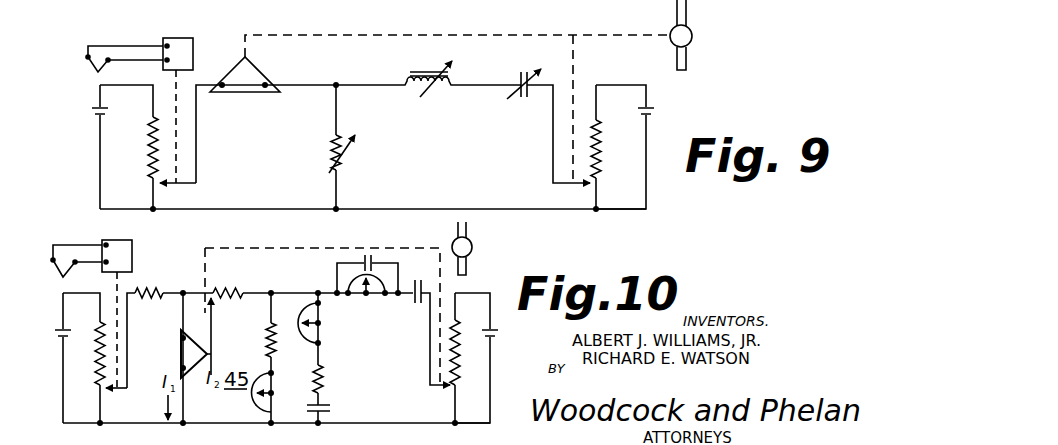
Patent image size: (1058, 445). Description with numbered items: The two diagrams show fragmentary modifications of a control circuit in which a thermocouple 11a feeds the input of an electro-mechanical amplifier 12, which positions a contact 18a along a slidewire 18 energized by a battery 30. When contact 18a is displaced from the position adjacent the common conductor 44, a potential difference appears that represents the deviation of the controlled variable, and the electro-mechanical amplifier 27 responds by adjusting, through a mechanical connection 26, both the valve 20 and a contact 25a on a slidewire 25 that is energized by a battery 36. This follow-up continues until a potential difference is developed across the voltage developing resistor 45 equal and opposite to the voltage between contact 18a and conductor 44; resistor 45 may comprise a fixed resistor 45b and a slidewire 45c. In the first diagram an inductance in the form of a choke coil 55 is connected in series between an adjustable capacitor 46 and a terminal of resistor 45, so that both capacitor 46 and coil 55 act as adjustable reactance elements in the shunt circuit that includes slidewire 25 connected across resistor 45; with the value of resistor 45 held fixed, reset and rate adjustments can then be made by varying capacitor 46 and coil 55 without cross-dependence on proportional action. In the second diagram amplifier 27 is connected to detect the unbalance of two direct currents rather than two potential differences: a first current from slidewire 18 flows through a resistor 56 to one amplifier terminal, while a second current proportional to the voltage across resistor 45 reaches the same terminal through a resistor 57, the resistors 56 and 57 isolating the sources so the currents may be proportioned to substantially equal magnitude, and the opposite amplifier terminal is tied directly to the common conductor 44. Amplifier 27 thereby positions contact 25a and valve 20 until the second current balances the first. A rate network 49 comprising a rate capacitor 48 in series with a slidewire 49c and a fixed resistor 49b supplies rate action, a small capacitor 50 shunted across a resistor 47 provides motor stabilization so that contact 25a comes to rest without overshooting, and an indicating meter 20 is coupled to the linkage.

In FIG. 9, the thermocouple 11a is at (92, 70).
In FIG. 10, the thermocouple 11a is at (60, 284).
In FIG. 9, the electro-mechanical amplifier 12 is at (193, 47).
In FIG. 10, the electro-mechanical amplifier 12 is at (133, 255).
In FIG. 9, the slidewire 18 is at (150, 140).
In FIG. 10, the slidewire 18 is at (98, 372).
In FIG. 9, the contact 18a is at (170, 187).
In FIG. 10, the contact 18a is at (111, 392).
In FIG. 9, the valve 20 is at (693, 35).
In FIG. 10, the valve 20 is at (473, 247).
In FIG. 9, the slidewire 25 is at (599, 174).
In FIG. 10, the slidewire 25 is at (458, 364).
In FIG. 9, the contact 25a is at (591, 188).
In FIG. 10, the contact 25a is at (442, 386).
In FIG. 9, the mechanical connection 26 is at (456, 34).
In FIG. 9, the electro-mechanical amplifier 27 is at (262, 71).
In FIG. 10, the electro-mechanical amplifier 27 is at (181, 355).
In FIG. 9, the battery 30 is at (92, 112).
In FIG. 10, the battery 30 is at (63, 340).
In FIG. 9, the battery 36 is at (661, 112).
In FIG. 10, the battery 36 is at (500, 331).
In FIG. 9, the common conductor 44 is at (422, 211).
In FIG. 10, the common conductor 44 is at (290, 424).
In FIG. 9, the resistor 45 is at (346, 158).
In FIG. 10, the fixed resistor 45b is at (264, 338).
In FIG. 10, the slidewire 45c is at (251, 385).
In FIG. 9, the capacitor 46 is at (548, 112).
In FIG. 10, the capacitor 46 is at (418, 280).
In FIG. 10, the resistor 47 is at (350, 283).
In FIG. 10, the rate capacitor 48 is at (331, 410).
In FIG. 10, the network 49 is at (364, 361).
In FIG. 10, the fixed resistor 49b is at (327, 388).
In FIG. 10, the slidewire 49c is at (321, 328).
In FIG. 10, the capacitor 50 is at (365, 256).
In FIG. 9, the choke coil 55 is at (428, 69).
In FIG. 10, the resistor 56 is at (143, 300).
In FIG. 10, the resistor 57 is at (222, 300).